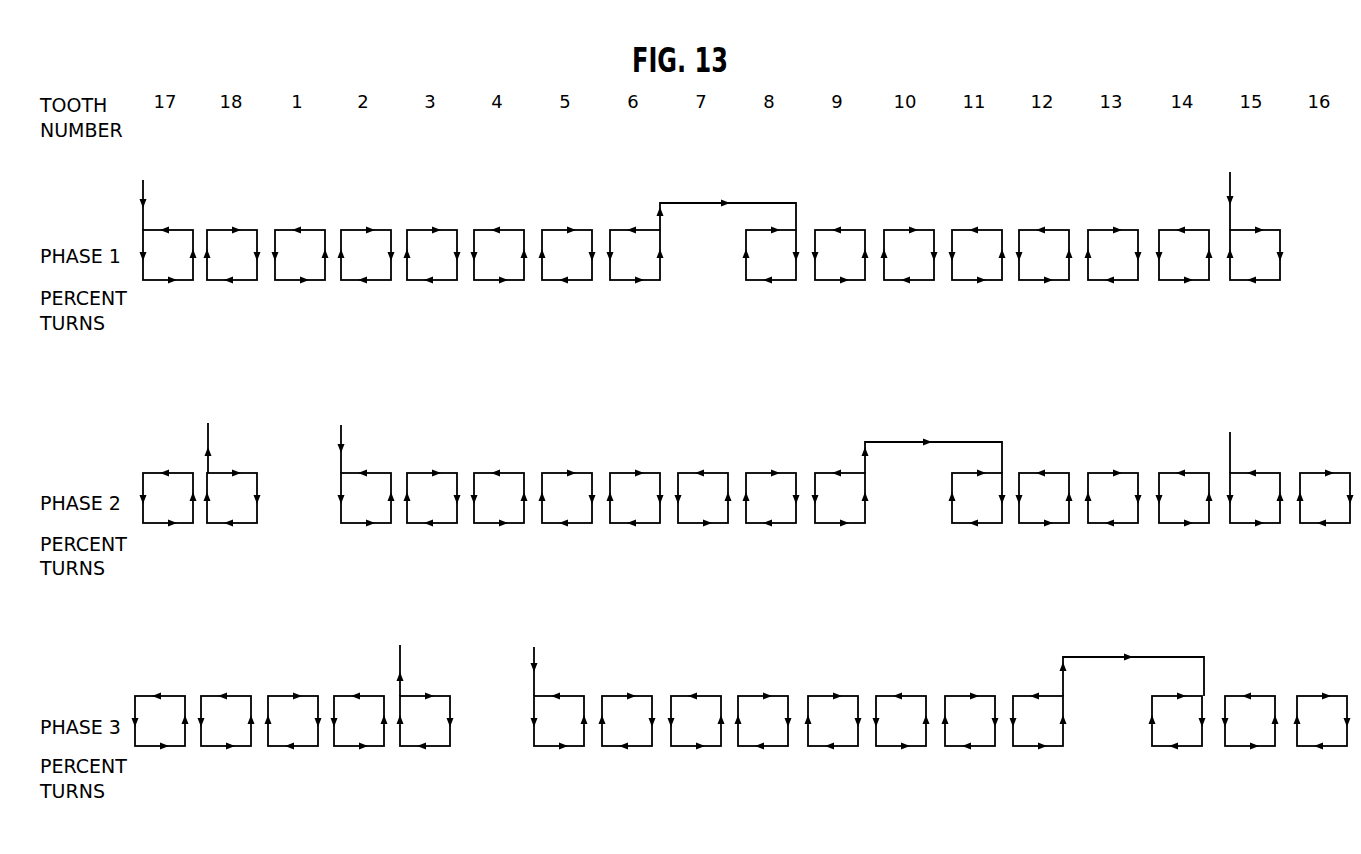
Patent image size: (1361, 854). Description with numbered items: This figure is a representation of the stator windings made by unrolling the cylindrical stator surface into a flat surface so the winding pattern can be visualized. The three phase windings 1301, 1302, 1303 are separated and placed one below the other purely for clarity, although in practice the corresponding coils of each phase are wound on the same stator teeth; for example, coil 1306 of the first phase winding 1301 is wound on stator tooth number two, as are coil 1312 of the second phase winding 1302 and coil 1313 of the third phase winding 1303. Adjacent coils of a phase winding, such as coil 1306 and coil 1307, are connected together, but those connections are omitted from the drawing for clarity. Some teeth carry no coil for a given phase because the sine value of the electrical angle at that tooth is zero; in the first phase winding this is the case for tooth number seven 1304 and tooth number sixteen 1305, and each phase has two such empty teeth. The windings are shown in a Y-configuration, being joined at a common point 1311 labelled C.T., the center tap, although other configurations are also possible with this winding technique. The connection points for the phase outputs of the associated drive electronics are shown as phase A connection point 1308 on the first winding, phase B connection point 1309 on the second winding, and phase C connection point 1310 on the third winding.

The phase winding 1301 is at (127, 241).
The phase winding 1302 is at (129, 468).
The phase winding 1303 is at (127, 700).
The tooth number 7 1304 is at (707, 252).
The tooth number 16 1305 is at (1315, 253).
The coil 1306 is at (387, 229).
The coil 1307 is at (422, 228).
The phase output connection point ΦA 1308 is at (143, 180).
The phase output connection point ΦB 1309 is at (208, 423).
The phase output connection point ΦC 1310 is at (534, 647).
The common point 1311 is at (1230, 181).
The coil 1312 is at (368, 472).
The coil 1313 is at (363, 696).